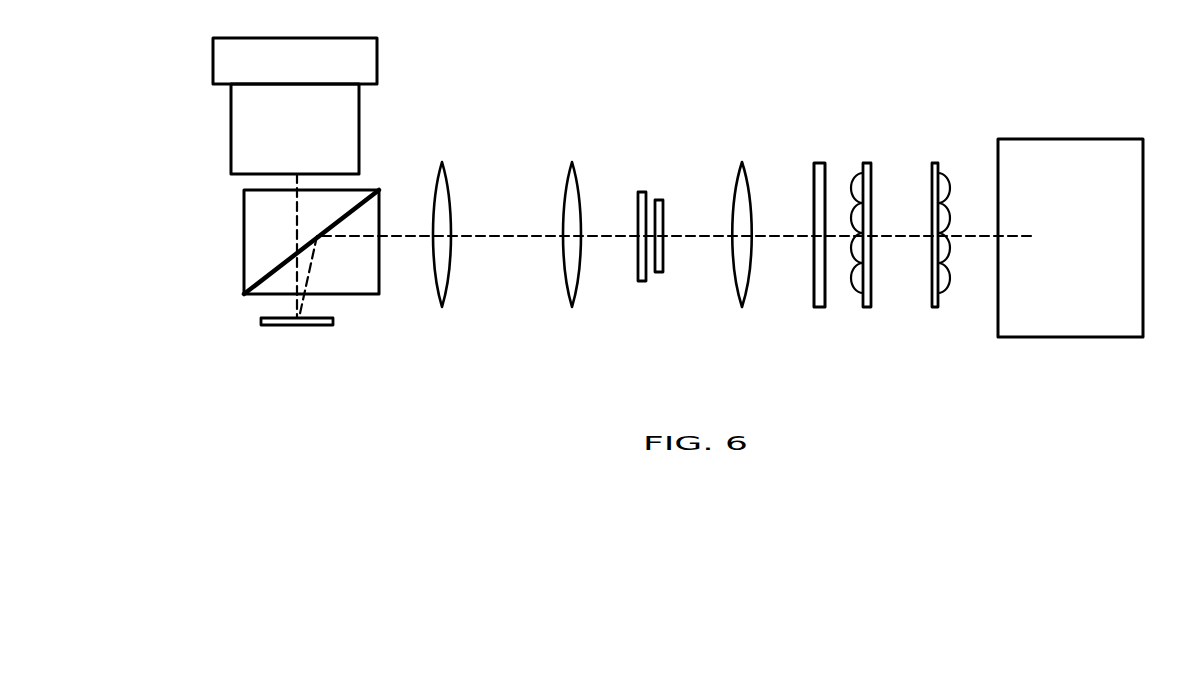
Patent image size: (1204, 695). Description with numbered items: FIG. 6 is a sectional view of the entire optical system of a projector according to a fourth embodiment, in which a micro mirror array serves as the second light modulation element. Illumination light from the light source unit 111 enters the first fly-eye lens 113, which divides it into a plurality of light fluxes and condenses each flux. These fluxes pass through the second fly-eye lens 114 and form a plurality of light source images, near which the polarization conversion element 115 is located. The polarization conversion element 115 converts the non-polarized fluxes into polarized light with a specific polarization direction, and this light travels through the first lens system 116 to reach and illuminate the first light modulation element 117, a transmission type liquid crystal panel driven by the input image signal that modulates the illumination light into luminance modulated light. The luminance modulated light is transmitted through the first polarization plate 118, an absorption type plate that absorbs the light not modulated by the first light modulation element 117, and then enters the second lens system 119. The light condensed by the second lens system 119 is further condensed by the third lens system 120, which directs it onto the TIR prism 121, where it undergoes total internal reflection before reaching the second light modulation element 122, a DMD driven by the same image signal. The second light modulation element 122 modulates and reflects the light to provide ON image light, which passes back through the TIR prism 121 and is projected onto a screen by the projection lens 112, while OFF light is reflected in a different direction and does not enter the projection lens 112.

The light source unit 111 is at (1110, 151).
The projection lens 112 is at (229, 60).
The first fly-eye lens 113 is at (937, 165).
The second fly-eye lens 114 is at (868, 165).
The polarization conversion element 115 is at (818, 165).
The first lens system 116 is at (742, 175).
The first light modulation element 117 is at (660, 200).
The first polarization plate 118 is at (638, 192).
The second lens system 119 is at (572, 284).
The third lens system 120 is at (442, 276).
The TIR prism 121 is at (255, 229).
The second light modulation element 122 is at (272, 321).